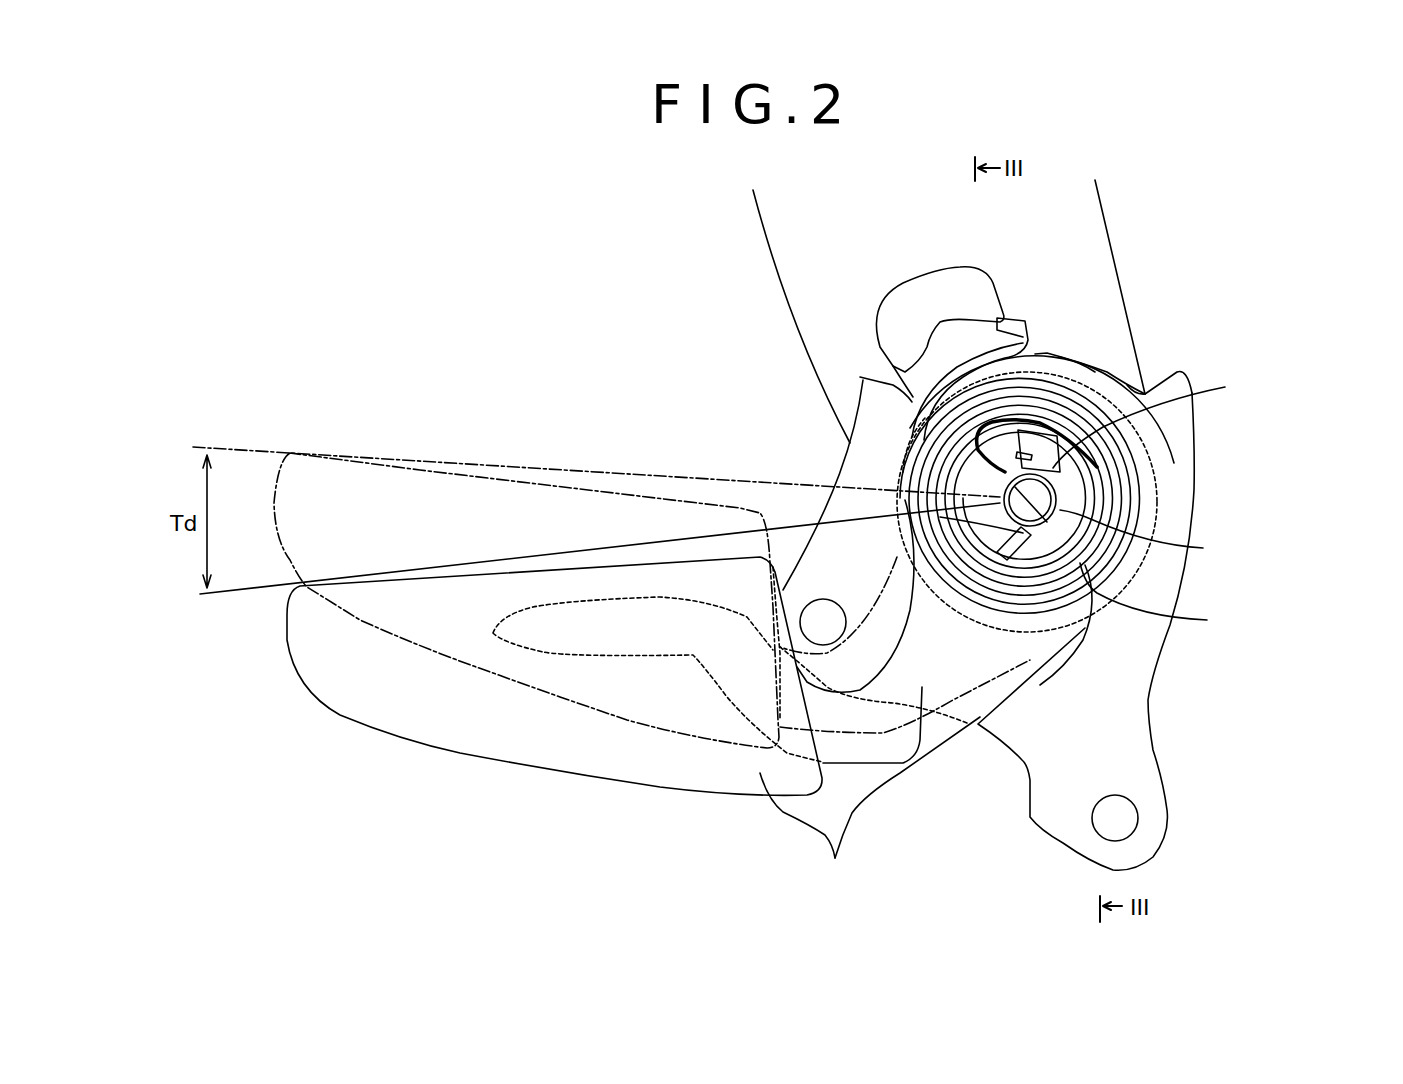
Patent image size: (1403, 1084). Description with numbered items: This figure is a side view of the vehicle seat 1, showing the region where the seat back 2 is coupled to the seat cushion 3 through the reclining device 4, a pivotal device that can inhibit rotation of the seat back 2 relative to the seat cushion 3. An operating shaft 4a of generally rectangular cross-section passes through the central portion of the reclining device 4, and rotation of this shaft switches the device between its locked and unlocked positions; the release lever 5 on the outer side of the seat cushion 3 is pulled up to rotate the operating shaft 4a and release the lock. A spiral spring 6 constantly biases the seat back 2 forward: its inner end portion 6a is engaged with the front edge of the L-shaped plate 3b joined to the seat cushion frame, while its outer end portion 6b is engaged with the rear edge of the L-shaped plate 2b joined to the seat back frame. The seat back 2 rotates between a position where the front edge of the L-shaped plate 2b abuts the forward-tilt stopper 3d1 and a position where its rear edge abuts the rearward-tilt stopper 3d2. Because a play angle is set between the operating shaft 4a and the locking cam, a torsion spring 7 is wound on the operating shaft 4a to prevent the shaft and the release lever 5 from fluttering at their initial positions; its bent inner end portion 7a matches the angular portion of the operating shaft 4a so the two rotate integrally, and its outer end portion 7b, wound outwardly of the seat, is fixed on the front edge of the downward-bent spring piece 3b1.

The vehicle seat 1 is at (576, 207).
The seat back 2 is at (1077, 220).
The L-shaped plate 2b is at (973, 350).
The seat cushion 3 is at (1177, 518).
The L-shaped plate 3b is at (1158, 421).
The spring piece 3b1 is at (1095, 372).
The forward-tilt stopper 3d1 is at (860, 377).
The rearward-tilt stopper 3d2 is at (1181, 376).
The reclining device 4 is at (1150, 457).
The operating shaft 4a is at (1089, 521).
The release lever 5 is at (652, 673).
The spiral spring 6 is at (913, 442).
The inner end portion 6a is at (903, 472).
The outer end portion 6b is at (1020, 323).
The torsion spring 7 is at (1110, 563).
The inner end portion 7a is at (1112, 585).
The outer end portion 7b is at (1097, 467).